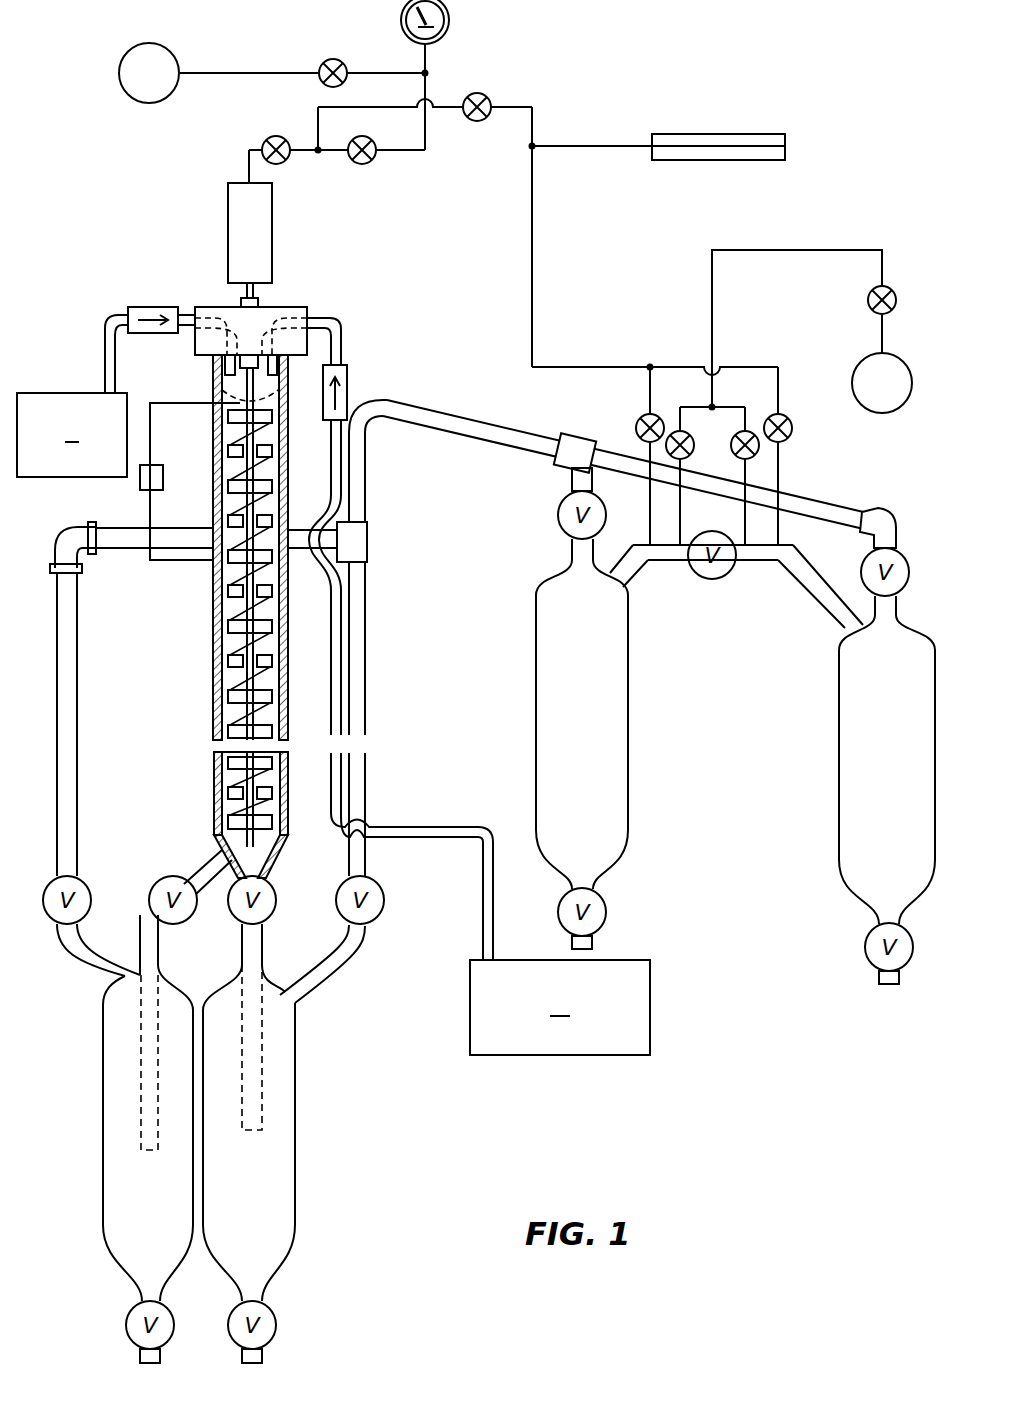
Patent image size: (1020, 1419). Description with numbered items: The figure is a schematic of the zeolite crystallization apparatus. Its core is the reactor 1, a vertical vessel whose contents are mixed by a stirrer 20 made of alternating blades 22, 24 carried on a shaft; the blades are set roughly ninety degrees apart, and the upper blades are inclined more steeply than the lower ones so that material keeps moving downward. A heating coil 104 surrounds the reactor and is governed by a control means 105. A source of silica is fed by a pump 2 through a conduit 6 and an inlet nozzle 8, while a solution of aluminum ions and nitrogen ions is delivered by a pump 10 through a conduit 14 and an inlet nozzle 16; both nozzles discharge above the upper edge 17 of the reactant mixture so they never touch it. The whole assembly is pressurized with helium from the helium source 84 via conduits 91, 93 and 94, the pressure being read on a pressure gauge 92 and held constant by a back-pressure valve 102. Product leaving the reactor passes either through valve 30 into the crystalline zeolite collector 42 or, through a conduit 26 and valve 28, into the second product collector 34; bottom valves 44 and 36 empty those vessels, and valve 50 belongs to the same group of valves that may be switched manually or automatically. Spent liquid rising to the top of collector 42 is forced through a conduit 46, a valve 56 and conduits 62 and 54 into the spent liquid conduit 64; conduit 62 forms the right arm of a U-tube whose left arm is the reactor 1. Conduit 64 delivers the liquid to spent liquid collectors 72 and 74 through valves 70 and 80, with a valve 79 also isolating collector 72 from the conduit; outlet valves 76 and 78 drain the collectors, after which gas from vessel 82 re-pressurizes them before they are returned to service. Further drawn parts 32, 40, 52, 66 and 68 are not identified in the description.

The reactor 1 is at (251, 616).
The pump 2 is at (106, 392).
The conduit 6 is at (200, 306).
The inlet nozzle 8 is at (222, 362).
The pump 10 is at (560, 1007).
The conduit 14 is at (424, 826).
The inlet nozzle 16 is at (300, 362).
The upper edge of the reactants mixture 17 is at (236, 404).
The stirrer 20 is at (272, 273).
The blade 22 is at (270, 488).
The blade 24 is at (213, 593).
The conduit 26 is at (202, 860).
The valve 28 is at (182, 922).
The valve 30 is at (275, 888).
The dip tube 32 is at (141, 1045).
The product collector 34 is at (103, 1150).
The valve 36 is at (126, 1325).
The dip tube 40 is at (262, 950).
The crystalline zeolite collector 42 is at (296, 1062).
The valve 44 is at (277, 1325).
The conduit 46 is at (340, 958).
The valve 50 is at (88, 878).
The inlet conduit 52 is at (116, 548).
The conduit 54 is at (367, 472).
The valve 56 is at (380, 891).
The conduit 62 is at (367, 630).
The spent liquid conduit 64 is at (457, 413).
The tee fitting 66 is at (578, 438).
The elbow fitting 68 is at (887, 518).
The valve 70 is at (558, 515).
The spent liquid collector 72 is at (622, 653).
The spent liquid collector 74 is at (839, 678).
The outlet valve 76 is at (606, 912).
The outlet valve 78 is at (866, 945).
The valve 79 is at (728, 576).
The valve 80 is at (862, 568).
The vessel 82 is at (860, 362).
The source of helium 84 is at (178, 54).
The conduit 91 is at (372, 72).
The pressure gauge 92 is at (450, 18).
The conduit 93 is at (318, 154).
The conduit 94 is at (533, 188).
The back-pressure valve 102 is at (712, 133).
The heating coil 104 is at (282, 410).
The control means 105 is at (140, 480).